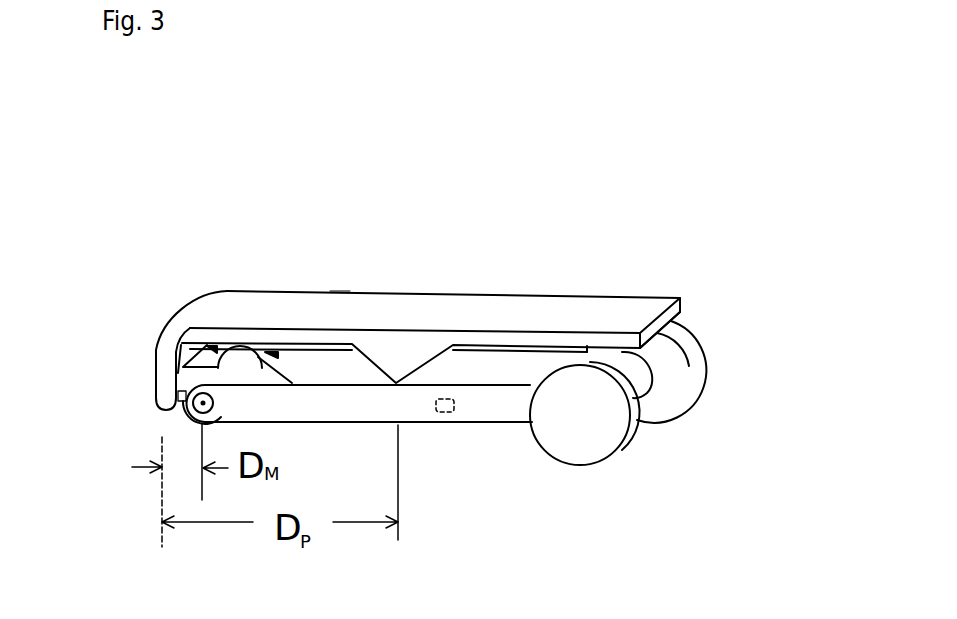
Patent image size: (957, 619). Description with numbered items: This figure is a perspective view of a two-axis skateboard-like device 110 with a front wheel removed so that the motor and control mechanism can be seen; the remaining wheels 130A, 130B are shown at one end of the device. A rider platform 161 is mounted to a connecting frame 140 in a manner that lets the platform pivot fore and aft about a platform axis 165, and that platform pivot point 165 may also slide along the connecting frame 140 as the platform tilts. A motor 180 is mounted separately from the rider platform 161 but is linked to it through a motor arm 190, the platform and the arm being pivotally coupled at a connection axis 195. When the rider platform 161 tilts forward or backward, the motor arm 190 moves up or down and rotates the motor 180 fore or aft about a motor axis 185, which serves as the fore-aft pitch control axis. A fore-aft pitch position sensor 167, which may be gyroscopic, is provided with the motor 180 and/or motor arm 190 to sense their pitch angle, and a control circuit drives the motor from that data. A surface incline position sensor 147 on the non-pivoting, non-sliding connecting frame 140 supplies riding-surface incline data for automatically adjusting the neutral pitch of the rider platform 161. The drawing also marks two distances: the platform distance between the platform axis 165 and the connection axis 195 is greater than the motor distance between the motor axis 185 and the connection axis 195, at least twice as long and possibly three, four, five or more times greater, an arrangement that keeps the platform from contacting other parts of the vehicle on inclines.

The two-axis skateboard-like device 110 is at (357, 173).
The front wheel 130A is at (603, 460).
The rear wheel 130B is at (693, 387).
The connecting frame 140 is at (487, 423).
The surface incline position sensor 147 is at (443, 422).
The rider platform 161 is at (580, 326).
The platform axis 165 is at (500, 291).
The fore-aft pitch position sensor 167 is at (186, 417).
The motor 180 is at (247, 367).
The motor axis 185 is at (333, 268).
The motor arm 190 is at (167, 395).
The connection axis 195 is at (310, 255).